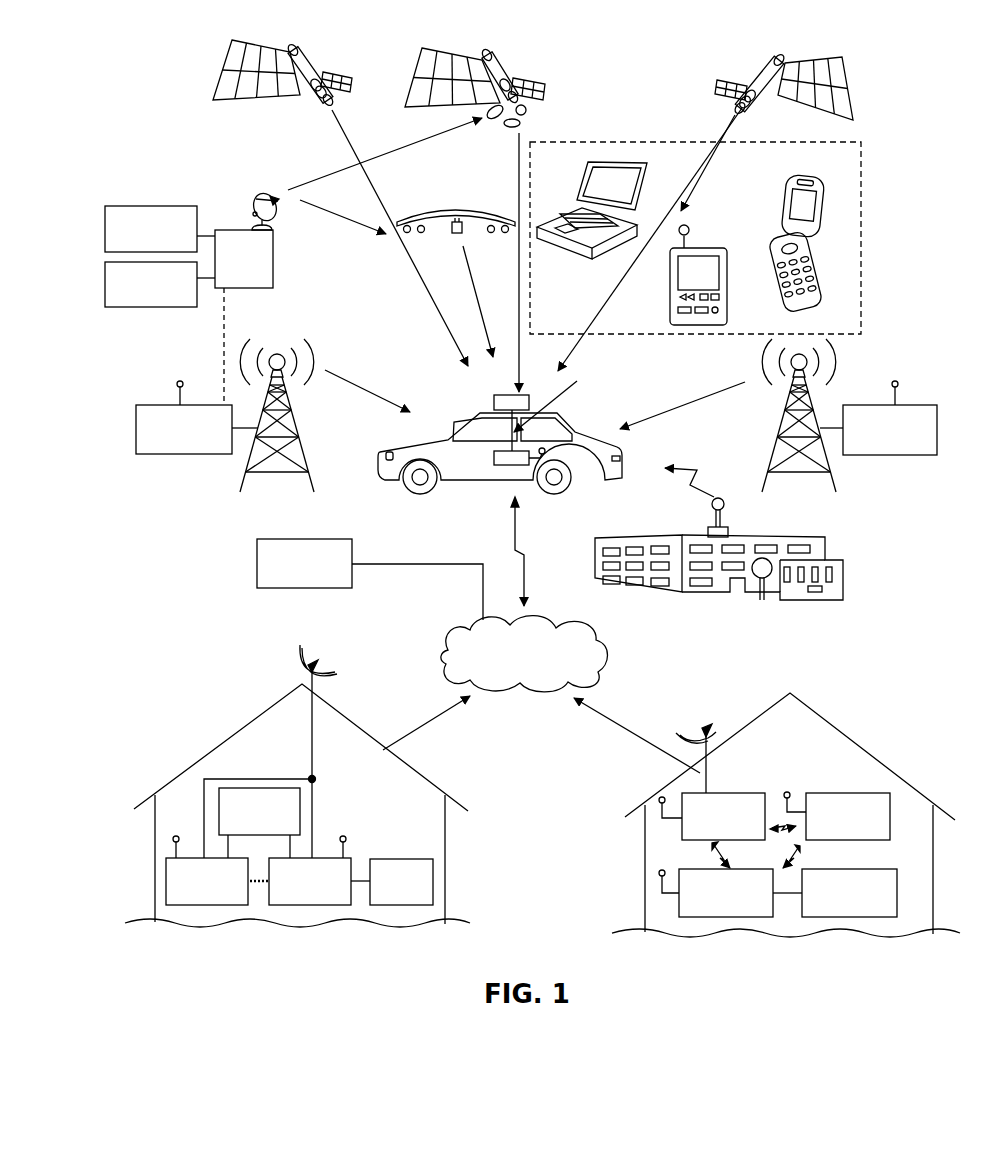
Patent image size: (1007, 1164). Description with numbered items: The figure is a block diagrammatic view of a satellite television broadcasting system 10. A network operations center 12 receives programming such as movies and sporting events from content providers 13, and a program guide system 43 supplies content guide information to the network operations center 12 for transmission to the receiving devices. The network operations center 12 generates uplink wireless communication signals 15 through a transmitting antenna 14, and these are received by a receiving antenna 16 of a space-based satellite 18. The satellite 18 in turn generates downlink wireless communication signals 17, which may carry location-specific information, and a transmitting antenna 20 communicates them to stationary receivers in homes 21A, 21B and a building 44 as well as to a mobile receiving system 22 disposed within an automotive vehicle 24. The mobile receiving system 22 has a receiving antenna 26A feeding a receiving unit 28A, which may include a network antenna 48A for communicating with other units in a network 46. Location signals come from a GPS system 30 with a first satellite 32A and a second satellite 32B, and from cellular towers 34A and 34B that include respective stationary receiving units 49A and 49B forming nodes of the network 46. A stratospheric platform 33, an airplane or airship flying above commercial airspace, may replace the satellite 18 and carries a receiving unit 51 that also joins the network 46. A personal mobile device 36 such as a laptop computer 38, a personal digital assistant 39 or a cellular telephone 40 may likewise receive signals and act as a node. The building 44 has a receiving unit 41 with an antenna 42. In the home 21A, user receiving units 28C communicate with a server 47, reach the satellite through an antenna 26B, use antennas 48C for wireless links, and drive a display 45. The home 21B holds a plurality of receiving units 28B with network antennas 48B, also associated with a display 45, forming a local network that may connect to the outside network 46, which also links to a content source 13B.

The satellite television broadcasting system 10 is at (260, 172).
The network operations center 12 is at (273, 258).
The content providers 13 is at (137, 206).
The content source 13B is at (305, 539).
The transmitting antenna 14 is at (277, 212).
The wireless communication signals 15 is at (330, 178).
The receiving antenna 16 is at (500, 118).
The wireless communication signals 17 is at (530, 137).
The satellite 18 is at (503, 76).
The transmitting antenna 20 is at (515, 118).
The home 21A is at (200, 765).
The home 21B is at (833, 726).
The mobile receiving system 22 is at (555, 397).
The automotive vehicle 24 is at (623, 450).
The receiving antenna 26A is at (494, 402).
The antenna 26B is at (325, 678).
The receiving unit 28A is at (505, 465).
The receiving unit 28B is at (890, 812).
The user receiving unit 28C is at (185, 905).
The GPS system 30 is at (205, 60).
The first satellite 32A is at (310, 62).
The second satellite 32B is at (768, 64).
The stratospheric platform 33 is at (418, 217).
The cellular tower 34A is at (298, 412).
The cellular tower 34B is at (783, 422).
The personal mobile device 36 is at (862, 172).
The laptop computer 38 is at (565, 250).
The personal digital assistant 39 is at (710, 245).
The cellular telephone 40 is at (780, 222).
The receiving unit 41 is at (700, 534).
The antenna 42 is at (724, 503).
The program guide system 43 is at (137, 307).
The building 44 is at (787, 538).
The display 45 is at (400, 905).
The network 46 is at (458, 634).
The server 47 is at (242, 788).
The network antenna 48A is at (548, 452).
The network antennas 48B is at (790, 792).
The antenna 48C is at (176, 836).
The receiving unit 49A is at (155, 454).
The receiving unit 49B is at (925, 405).
The receiving unit 51 is at (462, 218).